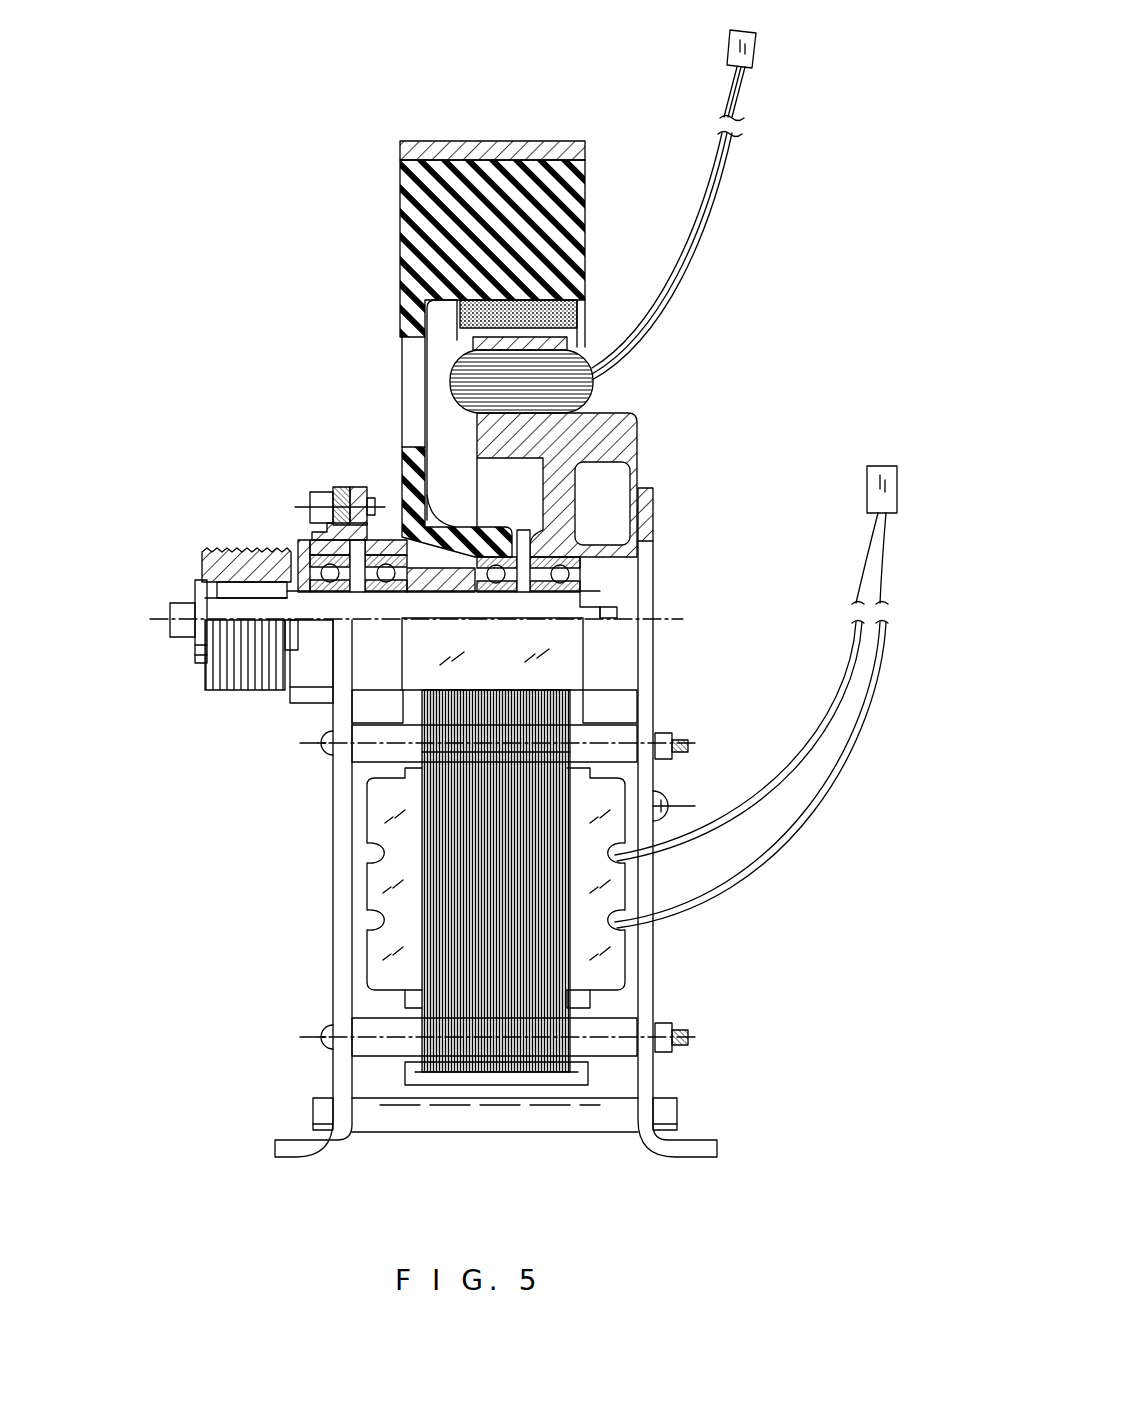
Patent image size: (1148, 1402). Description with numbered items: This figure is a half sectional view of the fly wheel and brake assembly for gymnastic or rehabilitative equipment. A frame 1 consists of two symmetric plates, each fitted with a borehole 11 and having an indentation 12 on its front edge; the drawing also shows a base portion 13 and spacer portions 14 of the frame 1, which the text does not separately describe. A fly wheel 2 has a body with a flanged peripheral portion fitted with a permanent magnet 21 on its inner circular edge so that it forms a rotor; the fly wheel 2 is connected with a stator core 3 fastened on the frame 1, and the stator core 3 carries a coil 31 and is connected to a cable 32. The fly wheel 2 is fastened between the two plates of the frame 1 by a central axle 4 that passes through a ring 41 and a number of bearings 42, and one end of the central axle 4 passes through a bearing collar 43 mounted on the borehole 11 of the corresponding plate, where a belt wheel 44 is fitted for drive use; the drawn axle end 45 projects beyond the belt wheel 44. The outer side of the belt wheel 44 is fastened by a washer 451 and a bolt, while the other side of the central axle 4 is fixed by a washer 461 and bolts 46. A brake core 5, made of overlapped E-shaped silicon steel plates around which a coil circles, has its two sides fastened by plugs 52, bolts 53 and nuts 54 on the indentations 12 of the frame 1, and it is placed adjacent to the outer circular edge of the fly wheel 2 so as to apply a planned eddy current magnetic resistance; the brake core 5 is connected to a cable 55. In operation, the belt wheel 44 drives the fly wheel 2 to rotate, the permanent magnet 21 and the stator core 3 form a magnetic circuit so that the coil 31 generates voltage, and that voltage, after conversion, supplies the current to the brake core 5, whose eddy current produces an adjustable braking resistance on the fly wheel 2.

The frame 1 is at (493, 851).
The borehole 11 is at (645, 580).
The indentation 12 is at (347, 897).
The base plate 13 is at (541, 1123).
The spacer 14 is at (328, 1122).
The fly wheel 2 is at (542, 197).
The permanent magnet 21 is at (543, 293).
The stator core 3 is at (610, 438).
The coil 31 is at (567, 377).
The cable 32 is at (720, 210).
The central axle 4 is at (322, 603).
The ring 41 is at (400, 533).
The bearing 42 is at (383, 525).
The bearing collar 43 is at (307, 543).
The belt wheel 44 is at (240, 572).
The shaft end 45 is at (178, 605).
The washer 451 is at (200, 650).
The bolt 46 is at (608, 614).
The washer 461 is at (604, 612).
The brake core 5 is at (540, 958).
The plug 52 is at (366, 1028).
The bolt 53 is at (323, 1025).
The nut 54 is at (660, 1023).
The cable 55 is at (860, 747).